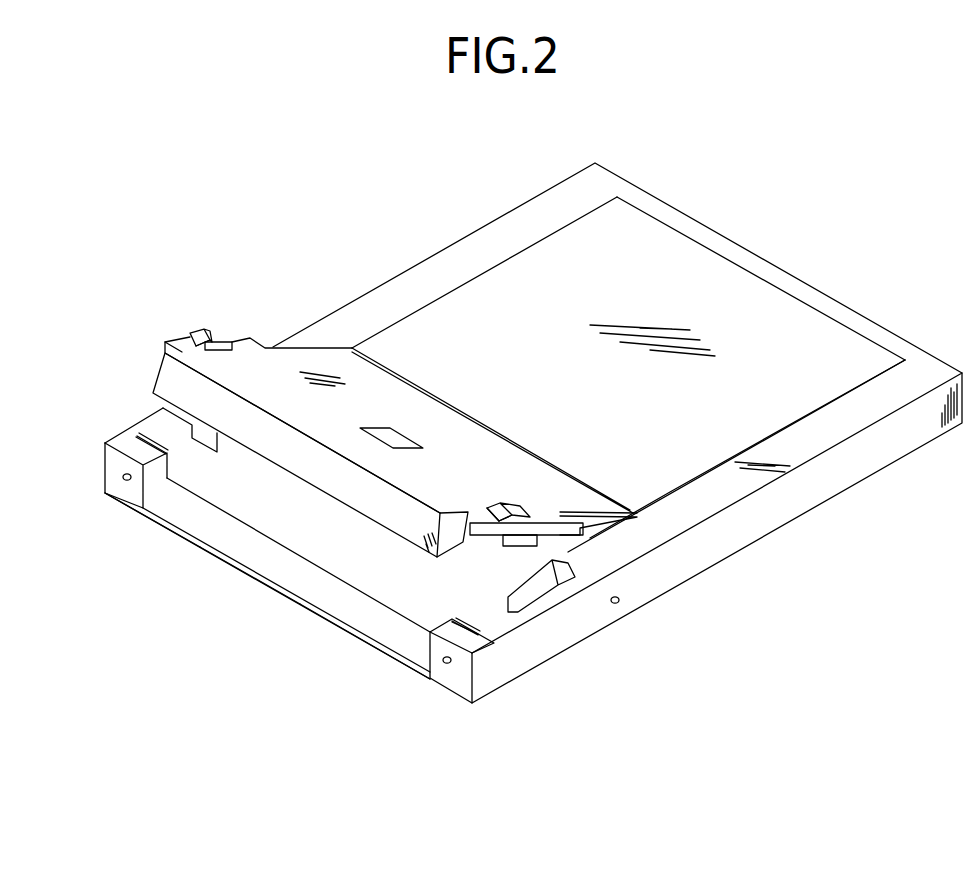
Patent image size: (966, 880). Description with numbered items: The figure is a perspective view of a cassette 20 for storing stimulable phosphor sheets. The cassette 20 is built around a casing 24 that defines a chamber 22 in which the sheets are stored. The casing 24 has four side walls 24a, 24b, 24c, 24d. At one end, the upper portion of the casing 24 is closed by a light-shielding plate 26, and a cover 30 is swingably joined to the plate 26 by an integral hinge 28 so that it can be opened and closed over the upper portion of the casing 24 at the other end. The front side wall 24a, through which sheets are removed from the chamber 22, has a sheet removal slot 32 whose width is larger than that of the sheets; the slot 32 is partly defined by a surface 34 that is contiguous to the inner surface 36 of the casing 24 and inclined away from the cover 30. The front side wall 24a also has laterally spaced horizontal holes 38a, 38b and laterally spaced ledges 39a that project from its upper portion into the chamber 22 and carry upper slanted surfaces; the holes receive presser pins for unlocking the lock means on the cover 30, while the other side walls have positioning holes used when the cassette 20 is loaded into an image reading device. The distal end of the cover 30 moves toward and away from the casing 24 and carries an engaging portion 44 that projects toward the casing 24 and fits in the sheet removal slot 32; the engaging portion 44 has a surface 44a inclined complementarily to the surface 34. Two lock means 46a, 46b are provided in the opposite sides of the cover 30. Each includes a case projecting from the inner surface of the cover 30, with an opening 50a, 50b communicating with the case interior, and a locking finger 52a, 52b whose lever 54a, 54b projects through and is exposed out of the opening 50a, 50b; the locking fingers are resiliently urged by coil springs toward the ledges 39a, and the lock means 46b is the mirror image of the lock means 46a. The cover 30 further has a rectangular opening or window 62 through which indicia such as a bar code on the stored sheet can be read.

The cassette 20 is at (425, 208).
The chamber 22 is at (343, 438).
The casing 24 is at (698, 553).
The front side wall 24a is at (128, 445).
The side wall 24b is at (722, 493).
The side wall 24c is at (733, 252).
The side wall 24d is at (495, 230).
The light-shielding plate 26 is at (770, 423).
The integral hinge 28 is at (607, 488).
The cover 30 is at (450, 405).
The sheet removal slot 32 is at (205, 527).
The surface 34 is at (240, 545).
The inner surface 36 is at (395, 605).
The hole 38a is at (447, 664).
The hole 38b is at (123, 476).
The ledge 39a is at (147, 438).
The engaging portion 44 is at (318, 487).
The inclined surface 44a is at (368, 520).
The lock means 46a is at (510, 494).
The lock means 46b is at (205, 326).
The opening 50a is at (540, 518).
The opening 50b is at (231, 343).
The locking finger 52a is at (485, 503).
The locking finger 52b is at (190, 330).
The lever 54a is at (505, 510).
The lever 54b is at (195, 338).
The window 62 is at (398, 427).